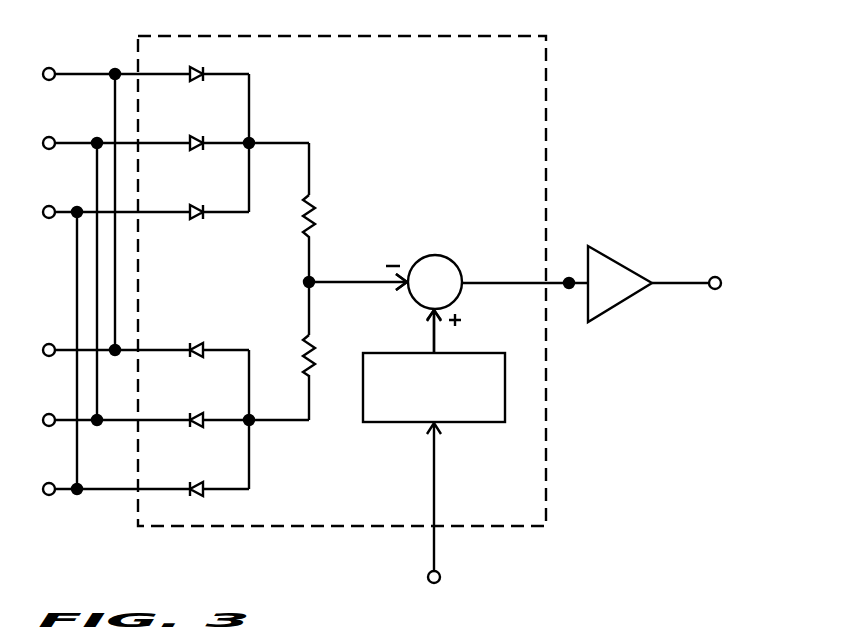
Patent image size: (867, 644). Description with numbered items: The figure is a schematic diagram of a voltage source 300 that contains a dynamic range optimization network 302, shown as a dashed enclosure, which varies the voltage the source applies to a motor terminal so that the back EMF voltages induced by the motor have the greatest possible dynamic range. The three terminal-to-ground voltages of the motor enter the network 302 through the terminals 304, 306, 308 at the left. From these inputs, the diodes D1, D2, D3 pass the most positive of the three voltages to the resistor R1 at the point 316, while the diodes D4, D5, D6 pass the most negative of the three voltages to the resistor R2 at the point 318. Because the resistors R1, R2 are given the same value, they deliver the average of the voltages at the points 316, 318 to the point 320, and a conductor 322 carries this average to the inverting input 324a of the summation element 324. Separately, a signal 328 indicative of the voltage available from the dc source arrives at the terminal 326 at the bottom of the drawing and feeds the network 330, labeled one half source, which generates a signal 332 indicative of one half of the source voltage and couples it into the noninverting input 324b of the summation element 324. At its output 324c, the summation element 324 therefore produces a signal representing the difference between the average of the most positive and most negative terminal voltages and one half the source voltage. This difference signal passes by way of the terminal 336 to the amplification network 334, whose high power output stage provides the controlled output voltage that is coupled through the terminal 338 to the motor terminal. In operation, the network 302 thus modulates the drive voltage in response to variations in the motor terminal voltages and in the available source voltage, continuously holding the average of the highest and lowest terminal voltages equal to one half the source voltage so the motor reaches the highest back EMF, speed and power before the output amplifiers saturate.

The voltage source 300 is at (644, 56).
The dynamic range optimization network 302 is at (440, 36).
The terminal 304 is at (49, 80).
The terminal 306 is at (49, 149).
The terminal 308 is at (49, 218).
The point 316 is at (312, 143).
The point 318 is at (300, 422).
The point 320 is at (300, 283).
The line to summer 322 is at (330, 281).
The summation element 324 is at (430, 256).
The inverting input 324a is at (407, 296).
The noninverting input 324b is at (440, 322).
The output 324c is at (463, 278).
The terminal 326 is at (442, 575).
The signal 328 is at (444, 618).
The network 330 is at (412, 426).
The signal 332 is at (407, 350).
The amplification network 334 is at (628, 262).
The terminal 336 is at (567, 288).
The terminal 338 is at (712, 290).
The diode D1 is at (214, 56).
The diode D2 is at (206, 141).
The diode D3 is at (212, 193).
The diode D4 is at (196, 348).
The diode D5 is at (196, 418).
The diode D6 is at (196, 487).
The resistor R1 is at (326, 265).
The resistor R2 is at (326, 355).